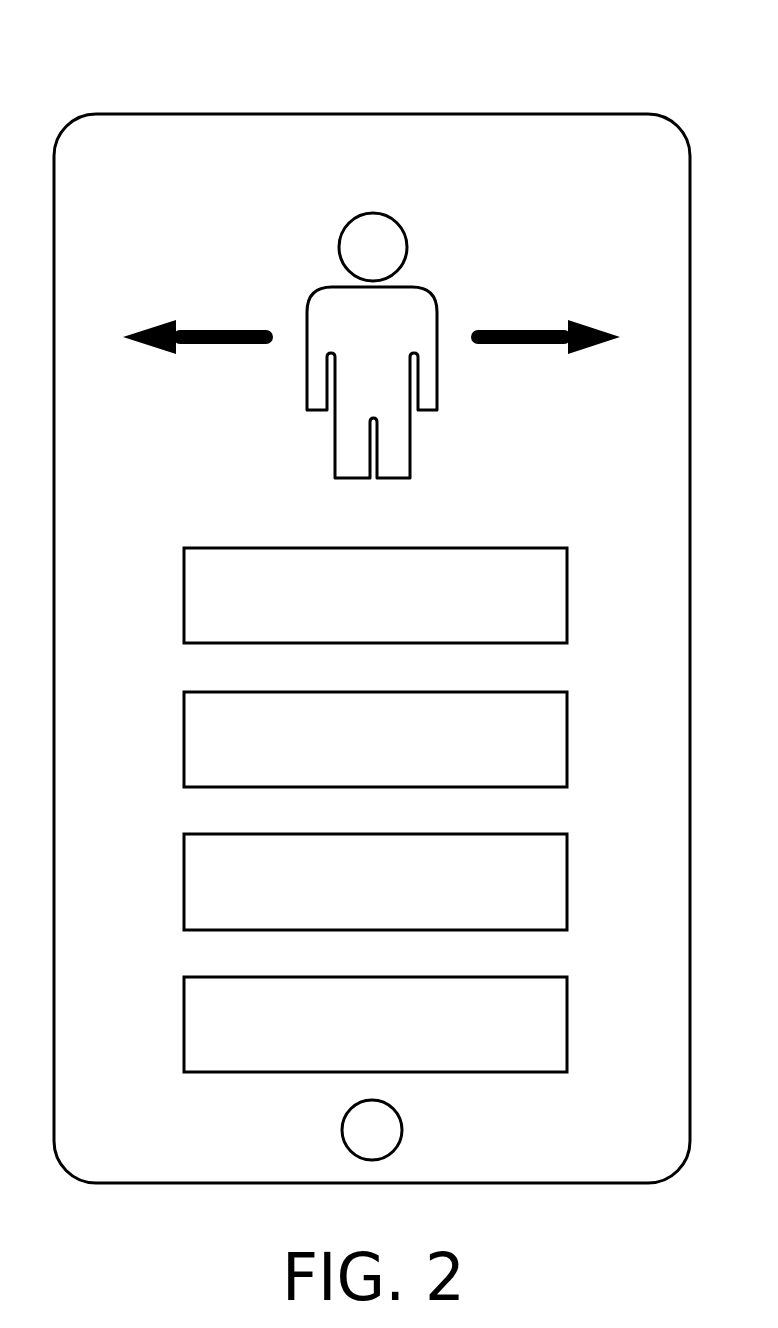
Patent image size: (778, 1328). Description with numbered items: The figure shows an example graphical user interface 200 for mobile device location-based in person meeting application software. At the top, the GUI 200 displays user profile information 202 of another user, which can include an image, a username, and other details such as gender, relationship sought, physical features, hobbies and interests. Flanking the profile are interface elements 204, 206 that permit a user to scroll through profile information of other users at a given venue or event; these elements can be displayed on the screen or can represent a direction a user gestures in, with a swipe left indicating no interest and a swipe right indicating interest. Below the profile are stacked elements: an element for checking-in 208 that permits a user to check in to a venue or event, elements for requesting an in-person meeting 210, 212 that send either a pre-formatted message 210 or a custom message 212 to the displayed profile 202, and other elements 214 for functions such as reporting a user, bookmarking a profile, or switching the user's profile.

The graphical user interface 200 is at (67, 36).
The displayed user profile information 202 is at (433, 258).
The interface element 204 is at (200, 302).
The interface element 206 is at (540, 303).
The element for checking-in 208 is at (375, 595).
The element for requesting an in-person meeting with pre-formatted message 210 is at (375, 739).
The element for requesting an in-person meeting with custom message 212 is at (375, 882).
The other elements 214 is at (375, 1024).